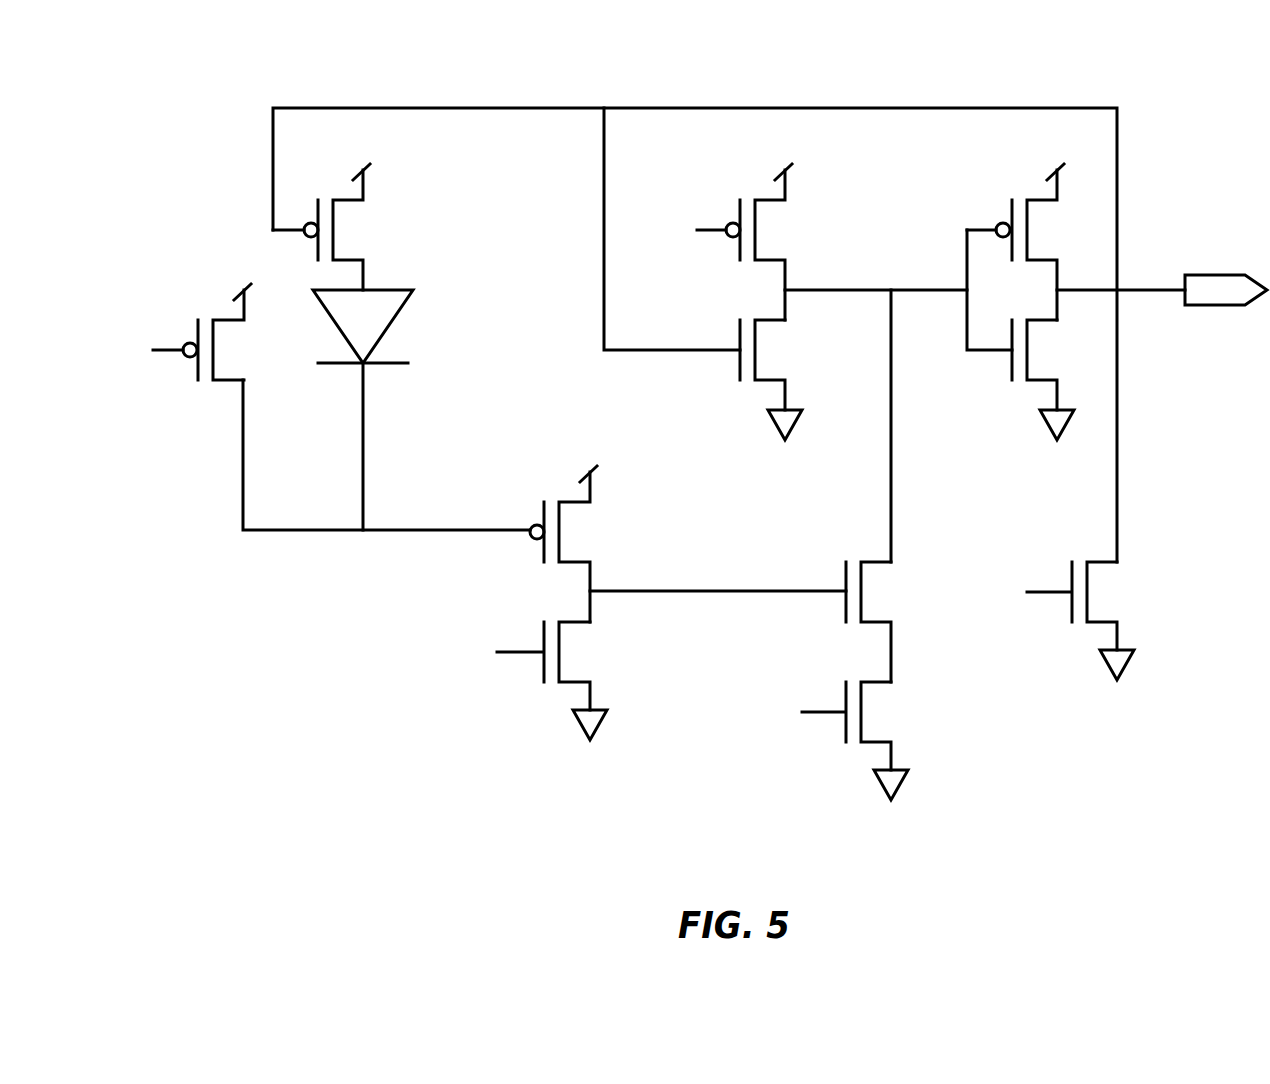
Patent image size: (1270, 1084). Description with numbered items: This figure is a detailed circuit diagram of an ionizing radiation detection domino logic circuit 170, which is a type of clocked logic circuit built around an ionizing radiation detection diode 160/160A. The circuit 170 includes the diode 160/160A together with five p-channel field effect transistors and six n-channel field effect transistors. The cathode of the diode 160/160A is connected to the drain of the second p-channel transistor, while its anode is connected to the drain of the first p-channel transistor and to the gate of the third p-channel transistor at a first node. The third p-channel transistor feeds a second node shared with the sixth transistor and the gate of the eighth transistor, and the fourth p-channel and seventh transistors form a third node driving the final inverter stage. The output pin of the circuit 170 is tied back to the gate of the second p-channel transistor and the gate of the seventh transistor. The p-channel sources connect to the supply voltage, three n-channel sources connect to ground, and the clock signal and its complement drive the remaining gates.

The ionizing radiation detection domino logic circuit 170 is at (689, 446).
The diode 160 is at (413, 318).
The diode 160A is at (372, 330).